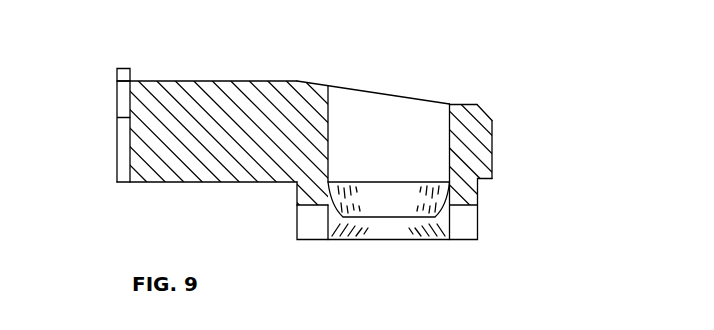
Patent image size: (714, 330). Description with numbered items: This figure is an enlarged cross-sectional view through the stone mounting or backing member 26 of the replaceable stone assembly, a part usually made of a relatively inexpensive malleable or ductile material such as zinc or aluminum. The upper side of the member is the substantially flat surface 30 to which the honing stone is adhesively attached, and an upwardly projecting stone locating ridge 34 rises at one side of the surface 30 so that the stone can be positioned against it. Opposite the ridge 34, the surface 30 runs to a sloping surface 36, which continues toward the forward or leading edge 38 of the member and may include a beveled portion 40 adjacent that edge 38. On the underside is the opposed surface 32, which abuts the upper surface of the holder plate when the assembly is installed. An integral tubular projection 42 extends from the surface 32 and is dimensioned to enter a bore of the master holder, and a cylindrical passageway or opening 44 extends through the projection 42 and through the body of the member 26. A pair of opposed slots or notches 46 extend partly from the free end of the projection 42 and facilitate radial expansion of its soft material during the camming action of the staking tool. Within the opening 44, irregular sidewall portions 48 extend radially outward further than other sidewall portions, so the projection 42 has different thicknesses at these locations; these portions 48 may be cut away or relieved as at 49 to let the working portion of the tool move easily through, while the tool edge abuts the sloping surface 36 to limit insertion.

The stone mounting or backing member 26 is at (178, 160).
The surface 30 is at (267, 80).
The opposed surface 32 is at (133, 183).
The stone locating ridge 34 is at (117, 78).
The sloping surface 36 is at (308, 81).
The forward or leading edge 38 is at (494, 148).
The beveled portion 40 is at (490, 112).
The tubular projection 42 is at (478, 197).
The cylindrical passageway or opening 44 is at (328, 127).
The slots or notches 46 is at (307, 229).
The sidewall portions 48 is at (393, 225).
The relieved or cut away portion 49 is at (333, 224).